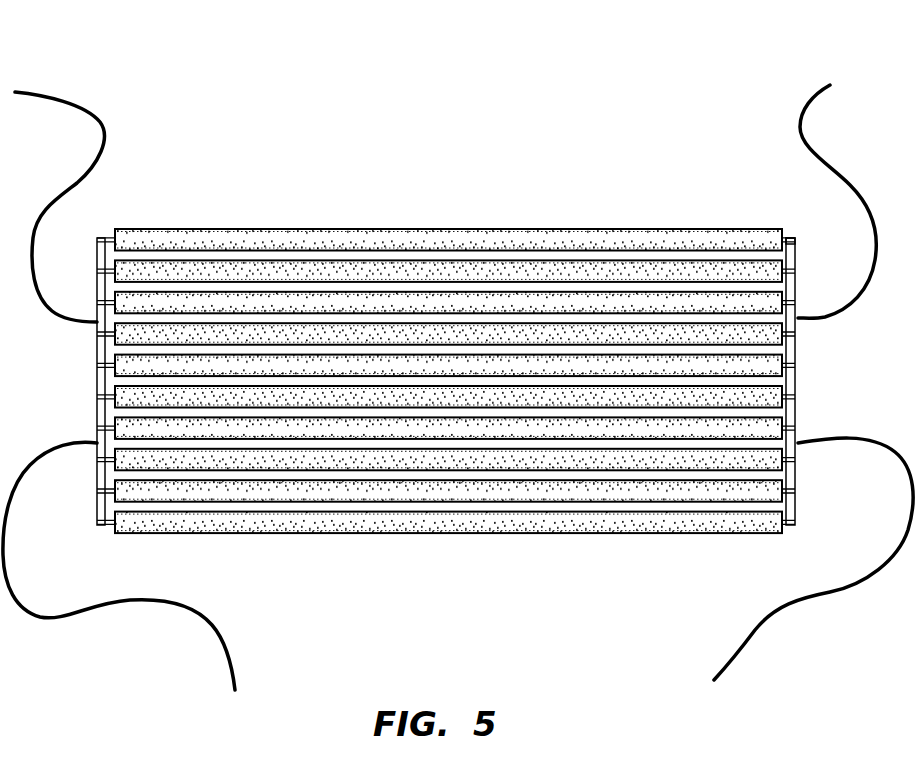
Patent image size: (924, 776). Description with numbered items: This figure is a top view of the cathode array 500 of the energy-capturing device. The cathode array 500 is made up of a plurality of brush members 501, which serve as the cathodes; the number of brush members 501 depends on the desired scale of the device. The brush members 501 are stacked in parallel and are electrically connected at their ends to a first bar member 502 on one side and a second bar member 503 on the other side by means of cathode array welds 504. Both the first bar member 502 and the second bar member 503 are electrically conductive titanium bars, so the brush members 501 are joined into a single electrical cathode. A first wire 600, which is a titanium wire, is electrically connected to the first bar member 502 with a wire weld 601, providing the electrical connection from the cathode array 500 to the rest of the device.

The cathode array 500 is at (122, 68).
The brush member 501 is at (517, 520).
The first bar member 502 is at (100, 503).
The second bar member 503 is at (790, 506).
The cathode array weld 504 is at (792, 238).
The first wire 600 is at (45, 618).
The wire weld 601 is at (90, 322).